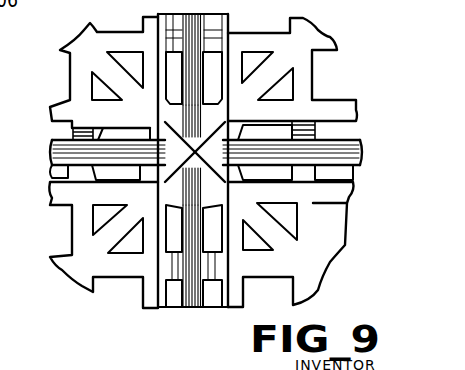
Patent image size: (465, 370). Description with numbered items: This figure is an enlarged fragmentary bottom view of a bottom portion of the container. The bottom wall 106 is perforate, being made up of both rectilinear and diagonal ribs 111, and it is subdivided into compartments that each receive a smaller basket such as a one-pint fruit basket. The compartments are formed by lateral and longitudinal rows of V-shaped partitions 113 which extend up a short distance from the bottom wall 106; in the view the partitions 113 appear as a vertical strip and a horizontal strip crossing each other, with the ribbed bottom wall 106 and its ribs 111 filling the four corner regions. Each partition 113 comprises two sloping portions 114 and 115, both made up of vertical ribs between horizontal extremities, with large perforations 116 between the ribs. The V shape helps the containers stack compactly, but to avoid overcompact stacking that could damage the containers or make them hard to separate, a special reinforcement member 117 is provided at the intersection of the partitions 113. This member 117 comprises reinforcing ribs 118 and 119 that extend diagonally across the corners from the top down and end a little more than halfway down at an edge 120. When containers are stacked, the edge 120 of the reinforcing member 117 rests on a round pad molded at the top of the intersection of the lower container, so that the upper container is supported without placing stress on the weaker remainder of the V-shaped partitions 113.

The bottom wall 106 is at (333, 43).
The rectilinear and diagonal ribs 111 is at (70, 79).
The V-shaped partitions 113 is at (192, 17).
The sloping portion 114 is at (183, 308).
The sloping portion 115 is at (205, 308).
The perforations 116 is at (107, 176).
The reinforcement member 117 is at (204, 159).
The reinforcing rib 118 is at (175, 164).
The reinforcing rib 119 is at (177, 140).
The edge 120 is at (193, 168).